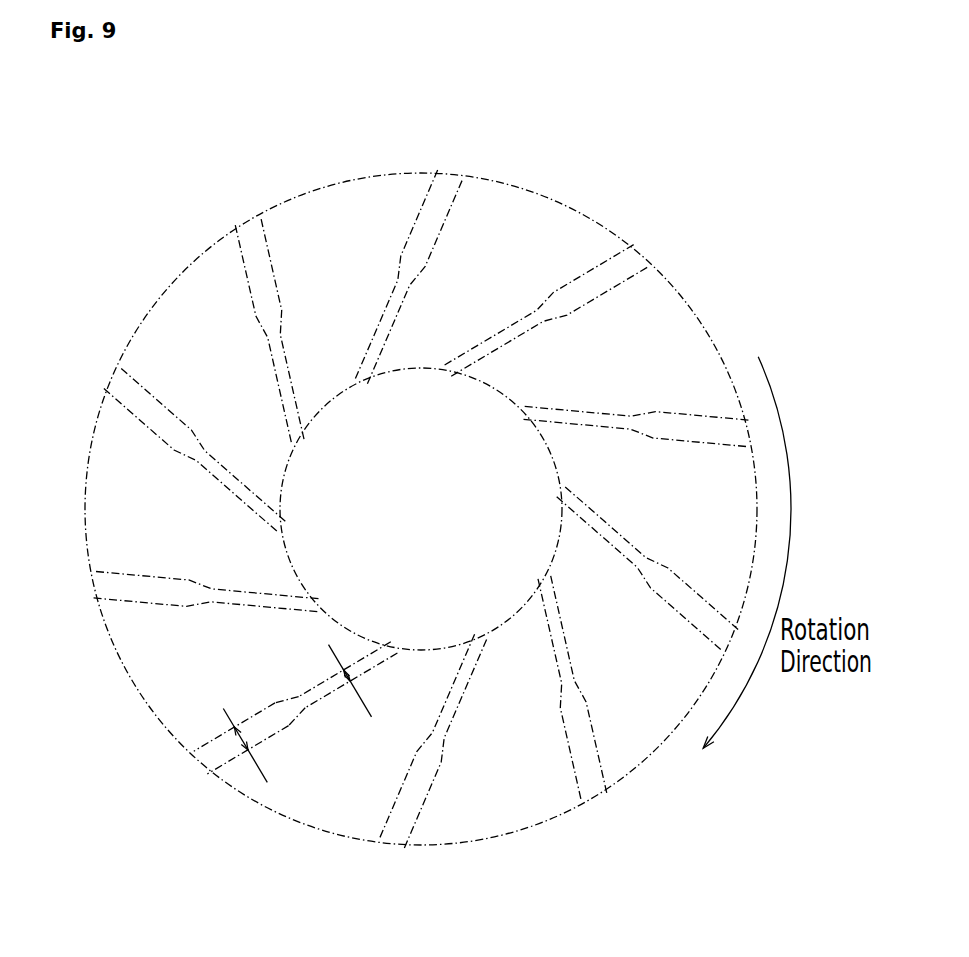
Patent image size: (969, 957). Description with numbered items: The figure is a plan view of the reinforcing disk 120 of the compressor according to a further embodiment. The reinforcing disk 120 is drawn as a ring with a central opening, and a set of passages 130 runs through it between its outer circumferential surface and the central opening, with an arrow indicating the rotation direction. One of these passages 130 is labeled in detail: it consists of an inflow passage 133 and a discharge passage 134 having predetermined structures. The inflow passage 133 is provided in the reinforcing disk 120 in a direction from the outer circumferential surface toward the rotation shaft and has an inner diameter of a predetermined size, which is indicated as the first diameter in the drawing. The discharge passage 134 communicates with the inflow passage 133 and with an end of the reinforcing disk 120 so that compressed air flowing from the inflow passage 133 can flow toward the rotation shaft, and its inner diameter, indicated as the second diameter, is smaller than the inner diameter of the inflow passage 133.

The reinforcing disk 120 is at (431, 146).
The blade 130 is at (163, 803).
The inflow passage 133 is at (214, 763).
The discharge passage 134 is at (328, 691).